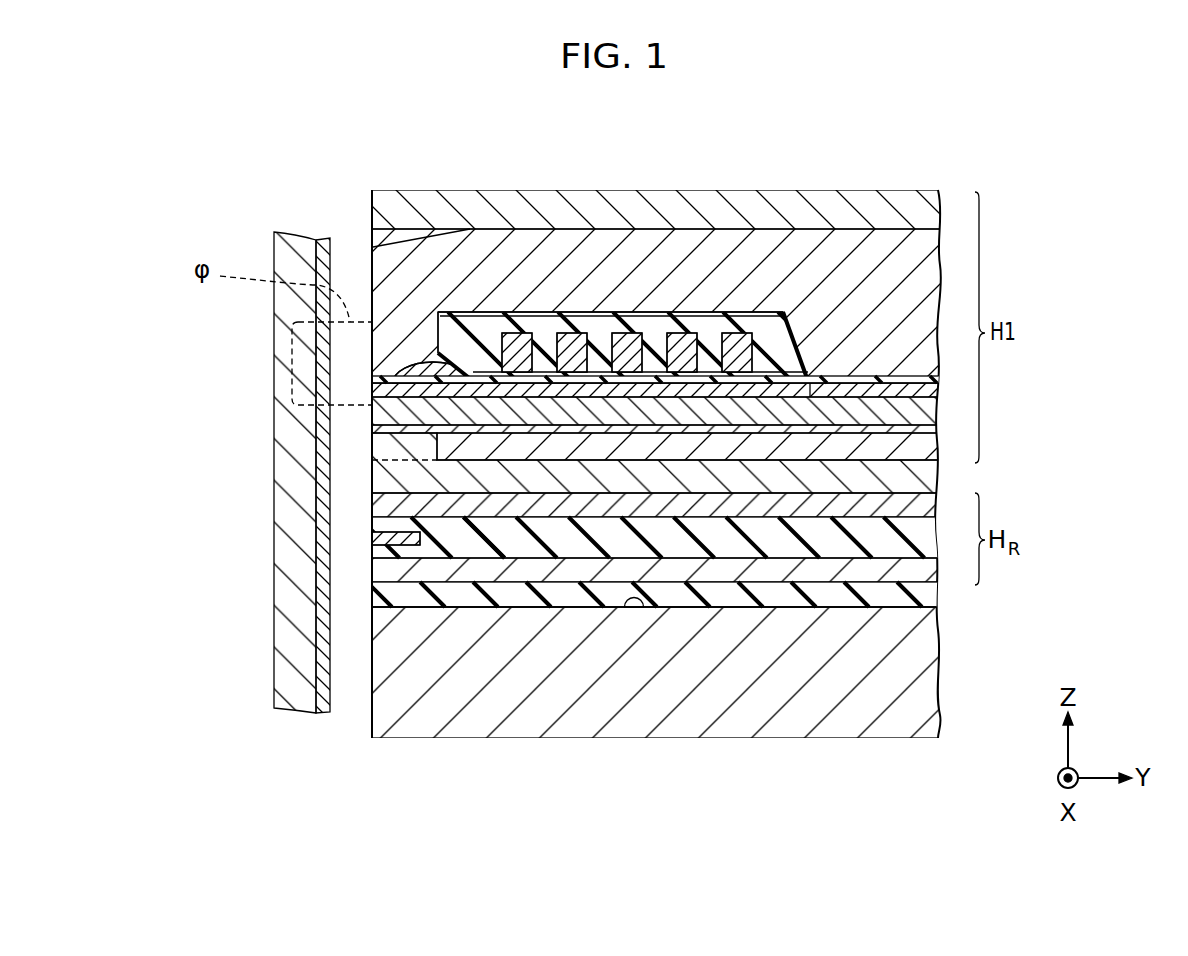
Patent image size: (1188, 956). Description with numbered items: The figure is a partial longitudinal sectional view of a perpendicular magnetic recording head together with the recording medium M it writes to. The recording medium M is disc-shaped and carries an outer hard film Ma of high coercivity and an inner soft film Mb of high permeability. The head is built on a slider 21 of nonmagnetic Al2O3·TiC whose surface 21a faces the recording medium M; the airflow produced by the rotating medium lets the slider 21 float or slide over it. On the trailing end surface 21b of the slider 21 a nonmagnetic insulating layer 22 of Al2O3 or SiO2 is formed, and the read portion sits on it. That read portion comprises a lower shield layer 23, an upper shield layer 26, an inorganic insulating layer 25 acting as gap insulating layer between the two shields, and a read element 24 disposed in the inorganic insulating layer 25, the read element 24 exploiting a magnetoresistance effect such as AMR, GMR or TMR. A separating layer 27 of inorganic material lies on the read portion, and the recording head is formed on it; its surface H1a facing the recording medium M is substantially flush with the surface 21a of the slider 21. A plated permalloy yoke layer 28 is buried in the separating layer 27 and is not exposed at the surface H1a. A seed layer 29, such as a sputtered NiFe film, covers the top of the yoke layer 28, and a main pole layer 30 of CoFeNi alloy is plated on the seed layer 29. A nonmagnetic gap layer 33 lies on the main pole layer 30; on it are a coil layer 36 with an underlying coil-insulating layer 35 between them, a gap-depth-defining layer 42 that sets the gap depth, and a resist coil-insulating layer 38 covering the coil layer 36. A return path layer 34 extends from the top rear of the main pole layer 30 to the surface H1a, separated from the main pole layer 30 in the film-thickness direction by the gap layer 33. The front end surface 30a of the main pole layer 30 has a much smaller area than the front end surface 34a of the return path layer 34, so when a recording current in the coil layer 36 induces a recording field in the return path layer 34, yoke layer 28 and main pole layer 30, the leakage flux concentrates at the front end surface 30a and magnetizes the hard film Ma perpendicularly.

The slider 21 is at (557, 683).
The surface of slider opposite the recording medium 21a is at (370, 713).
The trailing end surface of slider 21b is at (646, 607).
The nonmagnetic insulating layer 22 is at (372, 613).
The lower shield layer 23 is at (372, 593).
The read element 24 is at (372, 570).
The inorganic insulating layer 25 is at (476, 545).
The upper shield layer 26 is at (372, 537).
The separating layer 27 is at (372, 507).
The yoke layer 28 is at (833, 447).
The seed layer 29 is at (393, 478).
The main pole layer 30 is at (378, 427).
The front end surface of main pole layer 30a is at (372, 401).
The gap layer 33 is at (372, 388).
The return path layer 34 is at (790, 262).
The front end surface of return path layer 34a is at (372, 295).
The coil-insulating layer 35 is at (542, 378).
The coil layer 36 is at (630, 316).
The coil-insulating layer 38 is at (478, 323).
The gap-depth-defining layer 42 is at (433, 367).
The surface of magnetic head opposite the recording medium H1a is at (372, 352).
The recording medium M is at (248, 502).
The hard film Ma is at (323, 697).
The soft film Mb is at (292, 669).